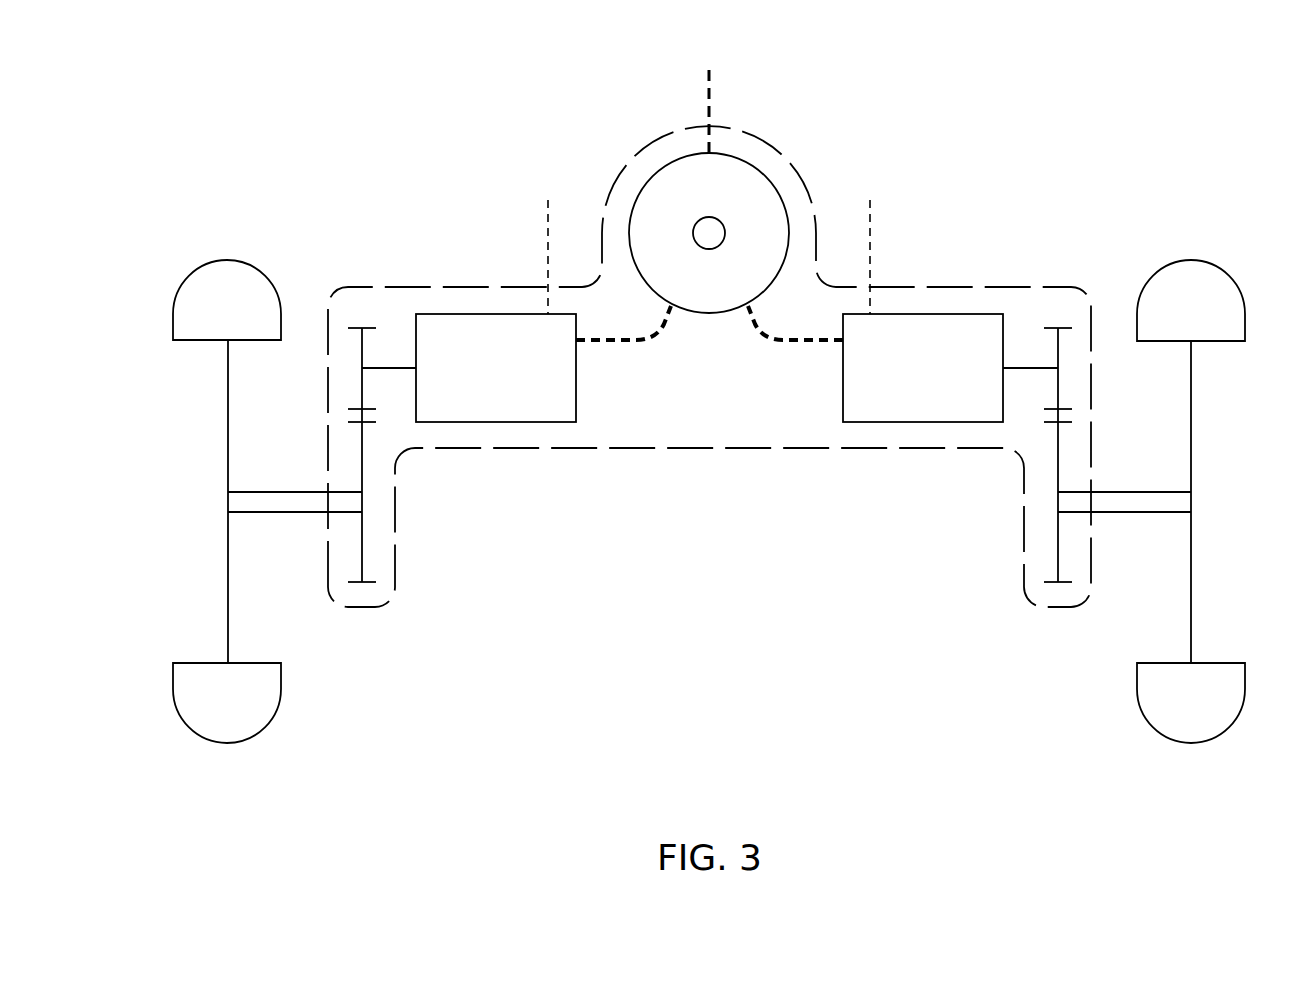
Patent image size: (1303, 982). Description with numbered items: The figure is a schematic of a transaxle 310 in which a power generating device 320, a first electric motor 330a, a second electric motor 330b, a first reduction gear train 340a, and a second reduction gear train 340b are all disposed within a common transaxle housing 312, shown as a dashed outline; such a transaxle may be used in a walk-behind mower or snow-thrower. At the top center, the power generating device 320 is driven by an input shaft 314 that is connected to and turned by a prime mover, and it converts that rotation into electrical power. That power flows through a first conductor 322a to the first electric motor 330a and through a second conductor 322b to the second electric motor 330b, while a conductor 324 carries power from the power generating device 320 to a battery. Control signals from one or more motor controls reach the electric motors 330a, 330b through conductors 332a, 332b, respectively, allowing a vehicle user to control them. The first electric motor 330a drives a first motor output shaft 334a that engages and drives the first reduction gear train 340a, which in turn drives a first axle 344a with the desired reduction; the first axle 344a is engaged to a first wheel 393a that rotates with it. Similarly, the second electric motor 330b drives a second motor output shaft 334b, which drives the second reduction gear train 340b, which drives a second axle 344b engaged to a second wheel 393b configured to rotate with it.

The transaxle 310 is at (385, 112).
The transaxle housing 312 is at (761, 137).
The input shaft 314 is at (712, 226).
The power generating device 320 is at (730, 289).
The first conductor 322a is at (605, 346).
The second conductor 322b is at (800, 346).
The conductor 324 is at (706, 86).
The first electric motor 330a is at (523, 379).
The second electric motor 330b is at (951, 379).
The conductor 332a is at (548, 232).
The conductor 332b is at (870, 232).
The first motor output shaft 334a is at (382, 366).
The second motor output shaft 334b is at (1036, 366).
The first reduction gear train 340a is at (345, 388).
The second reduction gear train 340b is at (1075, 388).
The first axle 344a is at (272, 512).
The second axle 344b is at (1147, 512).
The first wheel 393a is at (227, 603).
The second wheel 393b is at (1192, 603).